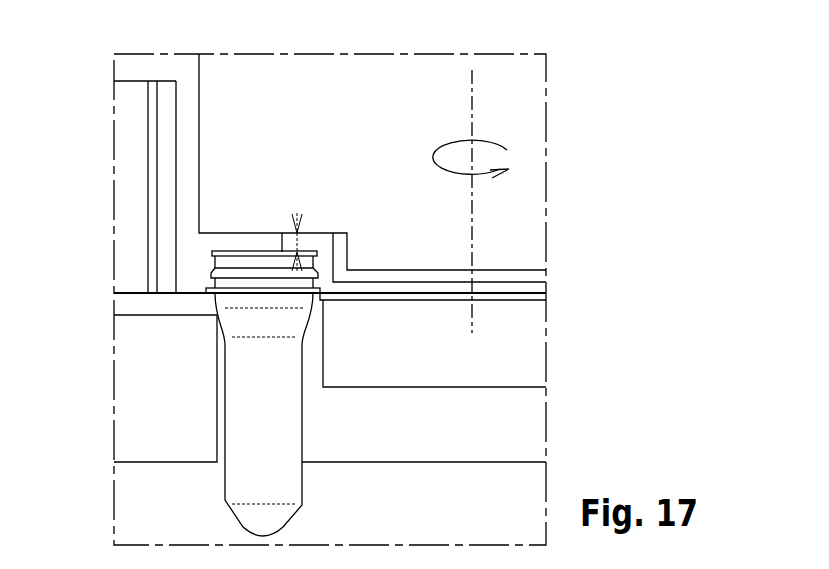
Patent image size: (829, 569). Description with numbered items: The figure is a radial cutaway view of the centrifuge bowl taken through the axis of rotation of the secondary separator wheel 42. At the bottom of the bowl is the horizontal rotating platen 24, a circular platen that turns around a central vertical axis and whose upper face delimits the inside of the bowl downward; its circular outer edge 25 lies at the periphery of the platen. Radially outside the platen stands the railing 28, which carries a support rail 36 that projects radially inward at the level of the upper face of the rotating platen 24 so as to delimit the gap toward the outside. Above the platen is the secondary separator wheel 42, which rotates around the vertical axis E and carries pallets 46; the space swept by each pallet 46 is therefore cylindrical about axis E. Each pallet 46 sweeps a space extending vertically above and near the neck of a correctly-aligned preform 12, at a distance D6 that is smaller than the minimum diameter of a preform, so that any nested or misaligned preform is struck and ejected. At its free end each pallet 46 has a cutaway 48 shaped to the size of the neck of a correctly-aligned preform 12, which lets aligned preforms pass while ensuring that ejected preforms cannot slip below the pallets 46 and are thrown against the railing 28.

The preform 12 is at (247, 485).
The rotating platen 24 is at (503, 352).
The circular outer edge 25 is at (312, 387).
The railing 28 is at (137, 162).
The support rail 36 is at (185, 305).
The secondary separator wheel 42 is at (518, 207).
The pallet 46 is at (363, 108).
The cutaway 48 is at (208, 234).
The distance D6 is at (300, 243).
The vertical axis E is at (473, 85).